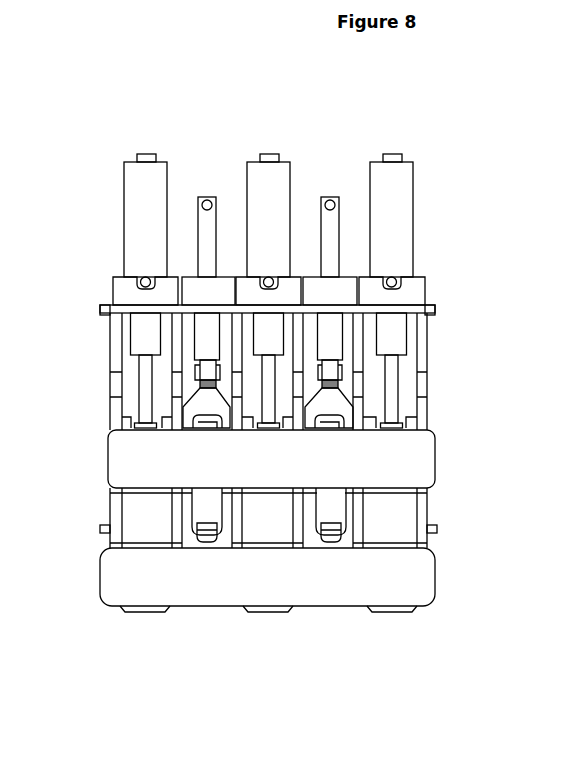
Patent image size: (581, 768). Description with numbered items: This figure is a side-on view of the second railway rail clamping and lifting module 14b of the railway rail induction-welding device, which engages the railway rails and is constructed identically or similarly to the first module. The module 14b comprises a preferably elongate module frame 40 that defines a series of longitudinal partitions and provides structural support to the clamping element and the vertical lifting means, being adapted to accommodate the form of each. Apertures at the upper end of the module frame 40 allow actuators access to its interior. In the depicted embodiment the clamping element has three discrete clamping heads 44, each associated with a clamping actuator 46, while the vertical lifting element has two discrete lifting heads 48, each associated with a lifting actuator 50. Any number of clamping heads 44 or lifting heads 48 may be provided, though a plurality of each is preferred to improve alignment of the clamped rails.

The second railway rail clamping and lifting module 14b is at (86, 204).
The module frame 40 is at (438, 556).
The clamping heads 44 is at (144, 616).
The clamping actuator 46 is at (146, 151).
The lifting heads 48 is at (205, 398).
The lifting actuator 50 is at (207, 194).